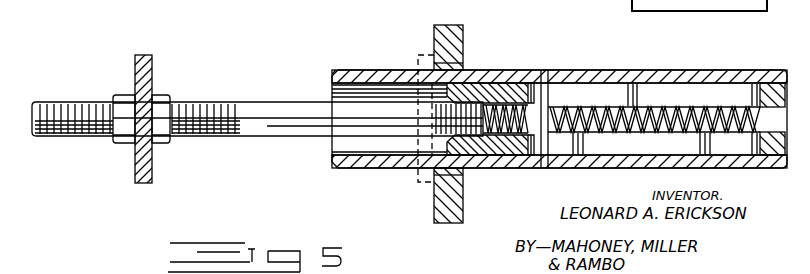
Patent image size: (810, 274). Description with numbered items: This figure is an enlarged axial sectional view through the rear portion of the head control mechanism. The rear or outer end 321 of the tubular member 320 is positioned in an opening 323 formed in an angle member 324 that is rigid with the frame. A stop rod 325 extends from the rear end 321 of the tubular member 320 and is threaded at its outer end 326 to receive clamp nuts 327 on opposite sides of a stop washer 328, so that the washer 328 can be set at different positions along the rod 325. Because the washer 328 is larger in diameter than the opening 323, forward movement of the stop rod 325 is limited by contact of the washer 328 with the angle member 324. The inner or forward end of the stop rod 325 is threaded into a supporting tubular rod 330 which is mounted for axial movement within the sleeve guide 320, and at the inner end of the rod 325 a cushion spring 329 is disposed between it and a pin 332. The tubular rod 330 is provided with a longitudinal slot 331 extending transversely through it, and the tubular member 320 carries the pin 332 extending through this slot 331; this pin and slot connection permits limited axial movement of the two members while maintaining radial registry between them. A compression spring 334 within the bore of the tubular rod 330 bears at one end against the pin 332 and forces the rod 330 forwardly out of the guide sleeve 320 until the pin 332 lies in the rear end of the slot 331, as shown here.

The tubular member 320 is at (700, 70).
The rear or outer end of tubular member 321 is at (387, 70).
The opening in angle member 323 is at (436, 48).
The angle member 324 is at (463, 47).
The stop rod 325 is at (268, 126).
The threaded outer end of stop rod 326 is at (61, 103).
The clamp nuts 327 is at (166, 95).
The stop washer 328 is at (151, 70).
The cushion spring 329 is at (512, 136).
The supporting tubular rod 330 is at (483, 84).
The slot 331 is at (633, 145).
The pin 332 is at (546, 72).
The compression spring 334 is at (634, 105).